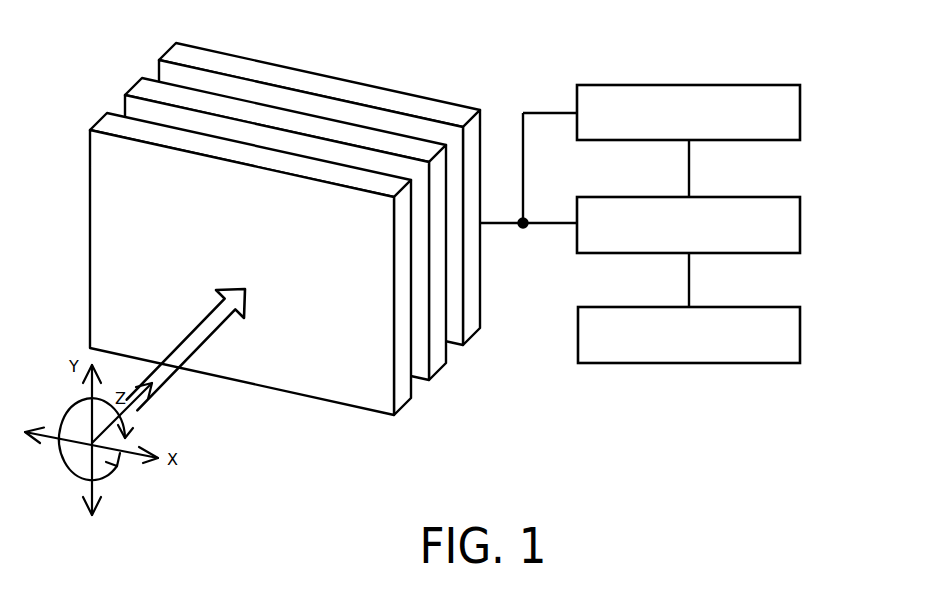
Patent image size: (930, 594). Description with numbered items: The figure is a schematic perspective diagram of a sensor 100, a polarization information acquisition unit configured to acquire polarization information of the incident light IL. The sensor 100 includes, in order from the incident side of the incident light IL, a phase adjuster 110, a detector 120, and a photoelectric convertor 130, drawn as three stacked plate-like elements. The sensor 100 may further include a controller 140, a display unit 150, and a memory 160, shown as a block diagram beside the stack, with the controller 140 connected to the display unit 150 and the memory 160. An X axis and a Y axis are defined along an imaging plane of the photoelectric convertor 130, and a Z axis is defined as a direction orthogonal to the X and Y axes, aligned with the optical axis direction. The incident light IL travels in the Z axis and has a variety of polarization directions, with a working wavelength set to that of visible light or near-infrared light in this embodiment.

The sensor 100 is at (343, 56).
The phase adjuster 110 is at (412, 408).
The detector 120 is at (445, 382).
The photoelectric convertor 130 is at (478, 347).
The controller 140 is at (801, 228).
The display unit 150 is at (801, 112).
The memory 160 is at (801, 336).
The incident light IL is at (175, 377).